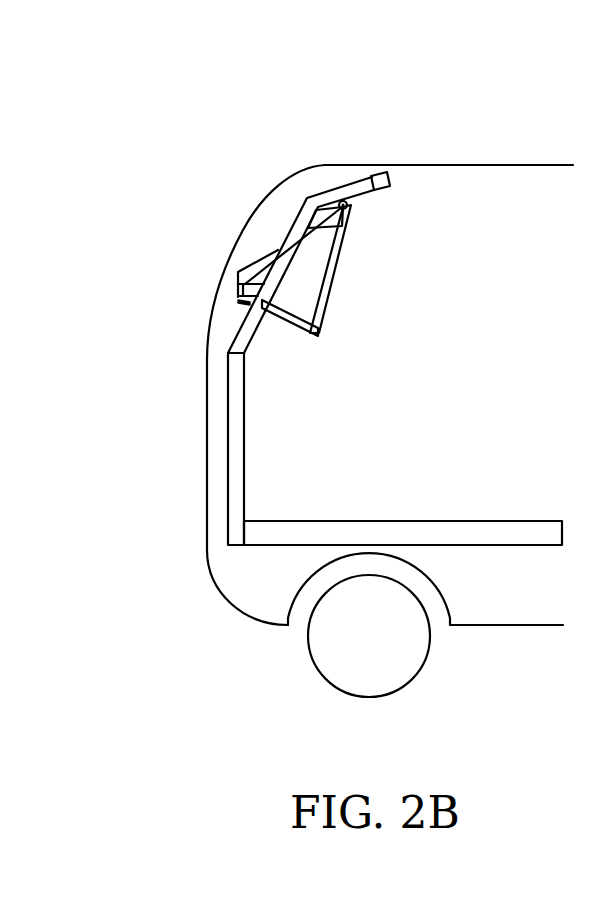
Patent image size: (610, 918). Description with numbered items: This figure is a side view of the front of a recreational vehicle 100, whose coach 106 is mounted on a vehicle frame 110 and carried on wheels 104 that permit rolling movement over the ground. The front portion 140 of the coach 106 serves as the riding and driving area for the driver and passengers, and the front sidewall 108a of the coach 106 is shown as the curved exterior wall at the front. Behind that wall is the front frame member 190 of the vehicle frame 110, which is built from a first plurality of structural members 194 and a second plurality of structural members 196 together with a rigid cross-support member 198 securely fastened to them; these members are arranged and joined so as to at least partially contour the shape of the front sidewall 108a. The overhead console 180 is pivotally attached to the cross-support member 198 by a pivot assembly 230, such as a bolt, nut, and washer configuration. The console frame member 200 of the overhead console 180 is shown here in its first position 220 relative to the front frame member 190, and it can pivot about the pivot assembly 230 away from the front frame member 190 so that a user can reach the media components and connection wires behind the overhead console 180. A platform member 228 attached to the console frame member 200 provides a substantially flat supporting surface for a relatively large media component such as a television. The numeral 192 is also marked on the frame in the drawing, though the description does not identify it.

The recreational vehicle 100 is at (447, 84).
The wheels 104 is at (395, 675).
The coach 106 is at (478, 177).
The front sidewall 108a is at (207, 500).
The vehicle frame 110 is at (472, 528).
The front portion 140 is at (476, 422).
The overhead console 180 is at (323, 265).
The front frame member 190 is at (227, 413).
The frame post 192 is at (238, 442).
The first plurality of structural members 194 is at (235, 510).
The second plurality of structural members 196 is at (383, 175).
The cross-support member 198 is at (264, 262).
The console frame member 200 is at (324, 278).
The first position 220 is at (352, 347).
The platform member 228 is at (243, 305).
The pivot assembly 230 is at (341, 202).